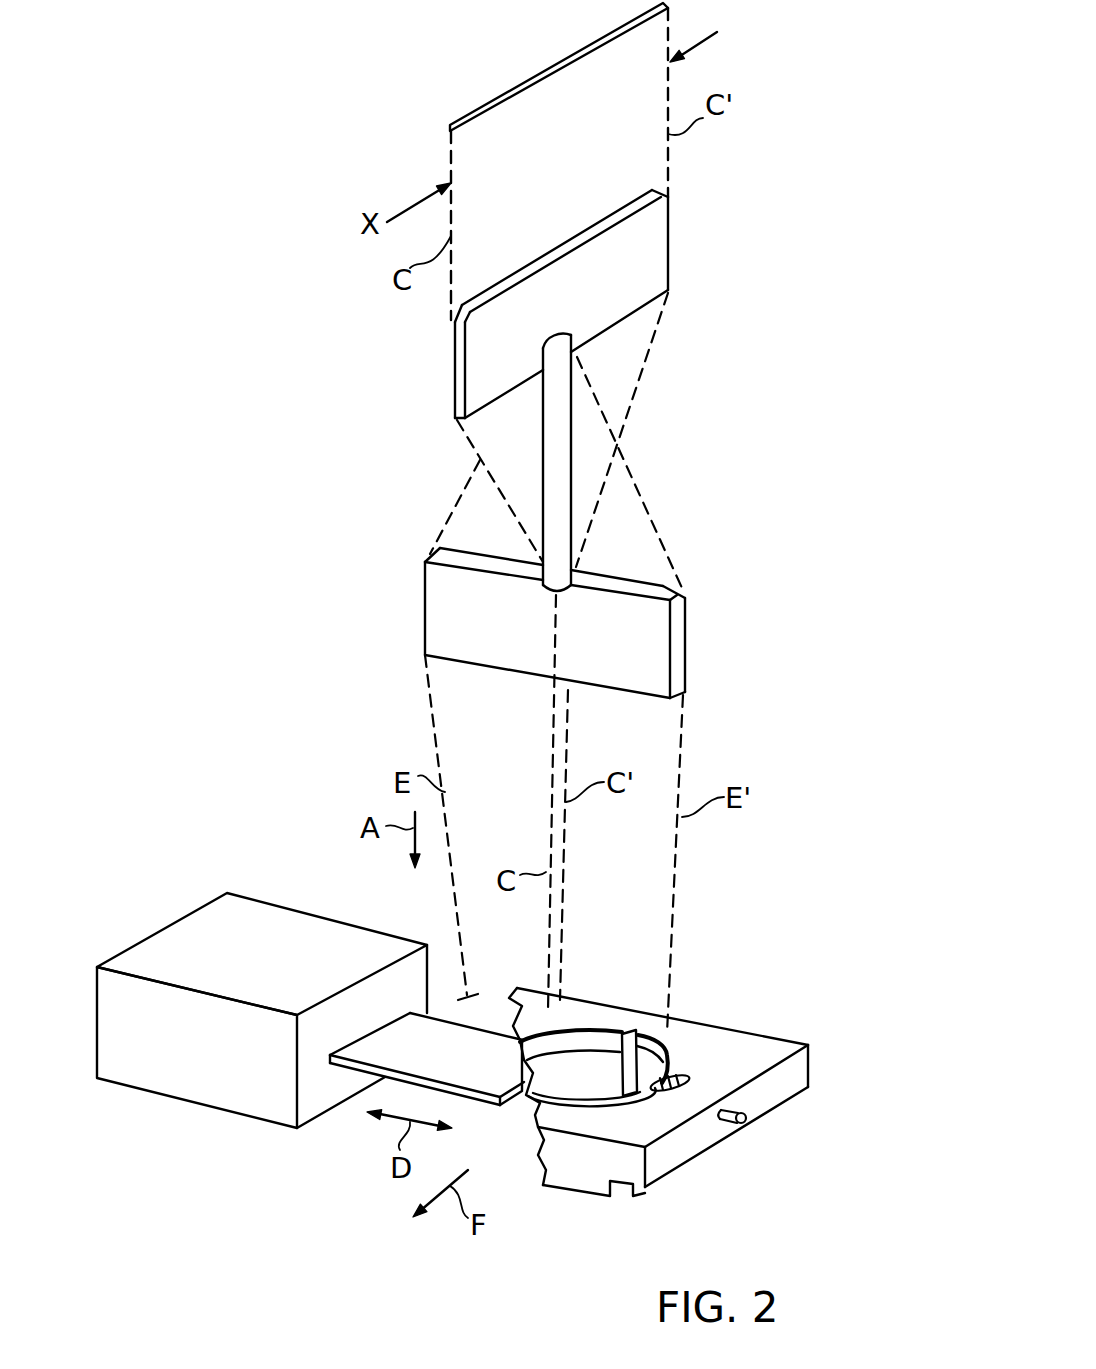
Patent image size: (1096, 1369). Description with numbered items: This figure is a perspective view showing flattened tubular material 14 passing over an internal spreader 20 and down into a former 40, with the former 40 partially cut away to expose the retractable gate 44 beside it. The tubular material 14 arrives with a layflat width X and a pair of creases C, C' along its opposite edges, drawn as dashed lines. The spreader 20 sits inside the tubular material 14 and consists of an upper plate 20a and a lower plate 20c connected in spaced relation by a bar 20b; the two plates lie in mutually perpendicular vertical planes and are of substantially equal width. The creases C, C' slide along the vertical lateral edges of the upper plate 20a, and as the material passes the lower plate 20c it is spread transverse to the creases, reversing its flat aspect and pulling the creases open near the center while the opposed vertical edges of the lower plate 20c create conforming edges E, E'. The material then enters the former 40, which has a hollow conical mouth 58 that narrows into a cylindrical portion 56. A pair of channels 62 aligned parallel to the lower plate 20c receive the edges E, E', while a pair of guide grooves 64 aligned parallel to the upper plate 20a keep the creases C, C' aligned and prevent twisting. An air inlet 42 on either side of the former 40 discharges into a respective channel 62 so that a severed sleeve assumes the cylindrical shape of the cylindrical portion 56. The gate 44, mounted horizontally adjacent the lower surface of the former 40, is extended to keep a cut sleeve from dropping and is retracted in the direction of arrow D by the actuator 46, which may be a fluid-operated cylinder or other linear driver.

The tubular material 14 is at (612, 164).
The spreader 20 is at (710, 424).
The upper plate 20a is at (648, 244).
The bar 20b is at (550, 407).
The lower plate 20c is at (655, 633).
The former 40 is at (757, 1007).
The inlet 42 is at (730, 1126).
The gate 44 is at (468, 1098).
The actuator 46 is at (258, 915).
The cylindrical portion 56 is at (588, 1089).
The conical mouth 58 is at (570, 1040).
The channel 62 is at (688, 1078).
The guide groove 64 is at (665, 1027).